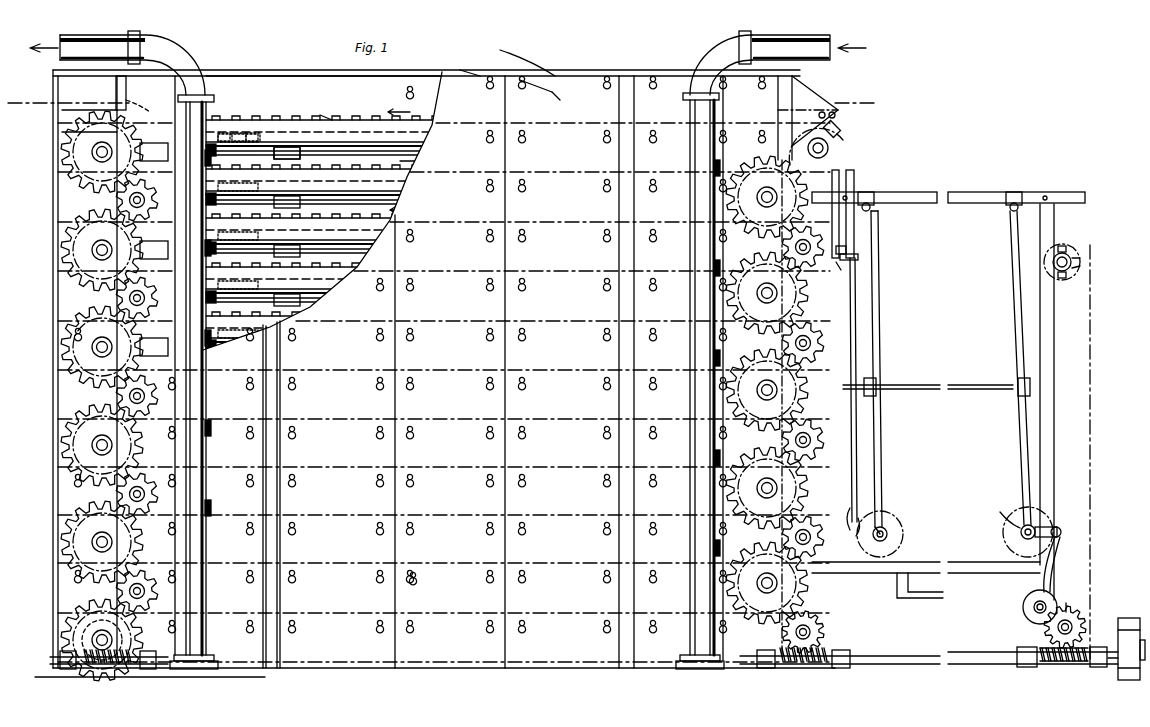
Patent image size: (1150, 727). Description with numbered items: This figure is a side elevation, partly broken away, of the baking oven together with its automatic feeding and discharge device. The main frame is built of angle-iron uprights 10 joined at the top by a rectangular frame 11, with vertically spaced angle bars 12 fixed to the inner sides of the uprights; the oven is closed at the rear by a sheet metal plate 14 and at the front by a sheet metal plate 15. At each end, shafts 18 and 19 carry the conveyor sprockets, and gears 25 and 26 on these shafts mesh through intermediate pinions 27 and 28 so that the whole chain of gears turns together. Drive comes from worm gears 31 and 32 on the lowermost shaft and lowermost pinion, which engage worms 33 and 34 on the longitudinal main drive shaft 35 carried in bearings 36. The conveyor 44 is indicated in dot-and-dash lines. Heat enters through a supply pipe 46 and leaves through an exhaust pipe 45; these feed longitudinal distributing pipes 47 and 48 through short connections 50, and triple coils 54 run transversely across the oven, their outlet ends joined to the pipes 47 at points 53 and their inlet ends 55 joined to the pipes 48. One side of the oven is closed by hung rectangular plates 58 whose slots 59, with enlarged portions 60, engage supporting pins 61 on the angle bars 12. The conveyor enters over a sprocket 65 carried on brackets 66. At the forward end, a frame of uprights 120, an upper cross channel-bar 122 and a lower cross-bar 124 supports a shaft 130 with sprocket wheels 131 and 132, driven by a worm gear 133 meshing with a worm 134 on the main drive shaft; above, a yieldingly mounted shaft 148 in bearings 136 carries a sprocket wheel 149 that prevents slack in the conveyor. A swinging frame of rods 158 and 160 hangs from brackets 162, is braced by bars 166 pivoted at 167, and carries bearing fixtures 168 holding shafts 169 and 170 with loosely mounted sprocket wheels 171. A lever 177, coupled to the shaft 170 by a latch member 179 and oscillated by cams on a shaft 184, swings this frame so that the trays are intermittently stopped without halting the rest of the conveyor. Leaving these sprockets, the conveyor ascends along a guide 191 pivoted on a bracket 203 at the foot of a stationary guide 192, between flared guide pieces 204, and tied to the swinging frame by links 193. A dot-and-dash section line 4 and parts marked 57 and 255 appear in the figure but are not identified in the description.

The section line 4 is at (443, 102).
The uprights 10 is at (832, 68).
The rectangular frame 11 is at (296, 75).
The angle bars 12 is at (372, 160).
The sheet metal plate 14 is at (56, 222).
The sheet metal plate 15 is at (818, 100).
The shafts 18 is at (96, 152).
The shafts 19 is at (766, 196).
The gears 25 is at (68, 142).
The gears 26 is at (796, 300).
The pinions 27 is at (100, 290).
The pinions 28 is at (806, 330).
The worm gear 31 is at (110, 672).
The worm gear 32 is at (786, 670).
The worm 33 is at (122, 672).
The worm 34 is at (806, 668).
The main drive shaft 35 is at (160, 670).
The bearings 36 is at (150, 672).
The conveyor 44 is at (546, 414).
The outlet or exhaust pipe 45 is at (178, 64).
The hot air or steam supply pipe 46 is at (708, 52).
The distributing pipes 47 is at (254, 132).
The distributing pipes 48 is at (336, 118).
The short connections 50 is at (420, 578).
The connection points 53 is at (226, 132).
The triple coils 54 is at (240, 132).
The inlet ends 55 is at (290, 146).
The hand wheel shaft 57 is at (1128, 684).
The rectangular plates 58 is at (458, 72).
The slots 59 is at (490, 90).
The enlarged portions 60 is at (524, 88).
The supporting pins 61 is at (412, 574).
The sprocket 65 is at (848, 138).
The brackets 66 is at (840, 116).
The uprights 120 is at (1052, 340).
The upper longitudinal cross channel-bar 122 is at (925, 192).
The lower cross-bar 124 is at (918, 562).
The shaft 130 is at (1078, 626).
The sprocket wheel 131 is at (1068, 592).
The sprocket wheel 132 is at (1022, 608).
The worm gear 133 is at (1076, 612).
The worm 134 is at (1064, 668).
The bearings 136 is at (1070, 246).
The shaft 148 is at (1072, 258).
The sprocket wheel 149 is at (1076, 268).
The rod 158 is at (1016, 276).
The rod 160 is at (880, 292).
The brackets 162 is at (868, 194).
The bars 166 is at (922, 385).
The pivotal connections 167 is at (878, 380).
The bearing fixtures 168 is at (884, 524).
The shaft 169 is at (890, 530).
The shaft 170 is at (1020, 530).
The sprocket wheels 171 is at (880, 510).
The lever 177 is at (1040, 580).
The latch member 179 is at (1058, 526).
The shaft 184 is at (1038, 610).
The guide 191 is at (812, 366).
The stationary guides 192 is at (858, 236).
The links 193 is at (858, 346).
The bracket 203 is at (858, 258).
The flared guide piece 204 is at (848, 252).
The pin 255 is at (828, 268).